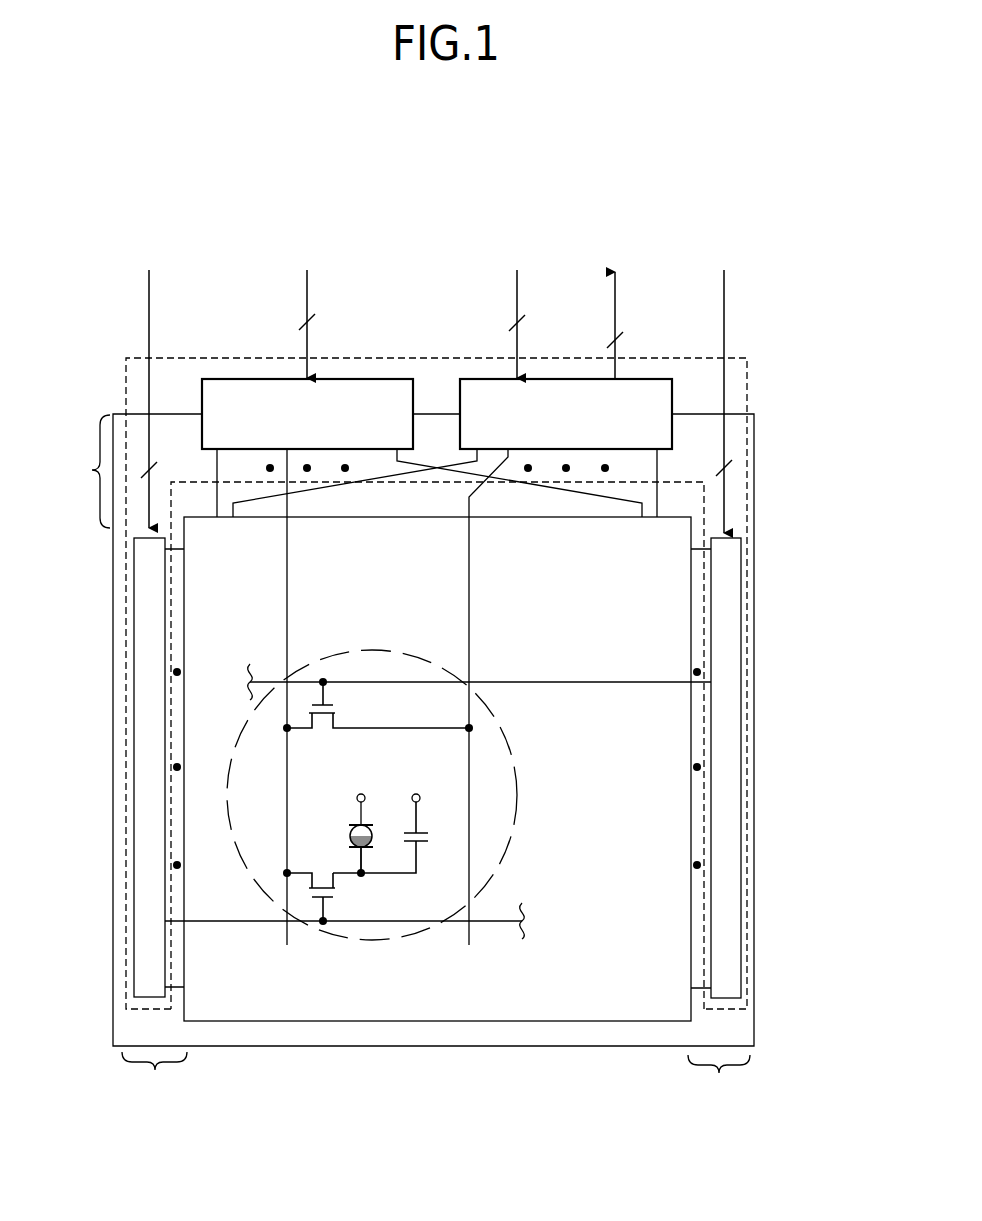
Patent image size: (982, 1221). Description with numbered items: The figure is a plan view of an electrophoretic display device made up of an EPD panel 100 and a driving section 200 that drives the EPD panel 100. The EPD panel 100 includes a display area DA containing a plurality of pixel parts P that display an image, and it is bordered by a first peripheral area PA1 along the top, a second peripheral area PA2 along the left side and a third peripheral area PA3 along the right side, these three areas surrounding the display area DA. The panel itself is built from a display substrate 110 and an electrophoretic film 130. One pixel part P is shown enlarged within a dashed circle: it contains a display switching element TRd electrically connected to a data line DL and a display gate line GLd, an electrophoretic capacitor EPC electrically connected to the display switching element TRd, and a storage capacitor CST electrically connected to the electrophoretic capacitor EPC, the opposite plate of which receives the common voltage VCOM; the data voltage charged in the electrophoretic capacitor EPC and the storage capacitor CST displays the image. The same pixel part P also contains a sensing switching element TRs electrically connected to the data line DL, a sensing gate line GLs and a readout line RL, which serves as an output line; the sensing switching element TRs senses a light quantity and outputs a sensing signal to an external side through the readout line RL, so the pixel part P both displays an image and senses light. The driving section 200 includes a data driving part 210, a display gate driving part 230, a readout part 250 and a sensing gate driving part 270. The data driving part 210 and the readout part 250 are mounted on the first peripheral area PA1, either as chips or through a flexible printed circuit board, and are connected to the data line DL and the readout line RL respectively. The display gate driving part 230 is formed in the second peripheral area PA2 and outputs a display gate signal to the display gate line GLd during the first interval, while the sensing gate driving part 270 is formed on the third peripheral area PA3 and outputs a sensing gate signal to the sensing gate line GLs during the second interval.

The EPD panel 100 is at (425, 1100).
The display substrate 110 is at (450, 1030).
The electrophoretic film 130 is at (492, 809).
The driving section 200 is at (747, 440).
The data driving part 210 is at (395, 378).
The readout part 250 is at (655, 378).
The display gate driving part 230 is at (134, 647).
The sensing gate driving part 270 is at (705, 622).
The display area DA is at (653, 810).
The data line DL is at (288, 601).
The readout line RL is at (470, 601).
The sensing gate line GLs is at (577, 684).
The display gate line GLd is at (232, 923).
The pixel part P is at (517, 795).
The sensing switching element TRs is at (378, 705).
The display switching element TRd is at (330, 897).
The common voltage VCOM is at (361, 797).
The electrophoretic capacitor EPC is at (335, 849).
The storage capacitor CST is at (400, 833).
The first peripheral area PA1 is at (78, 471).
The second peripheral area PA2 is at (154, 1075).
The third peripheral area PA3 is at (719, 1076).